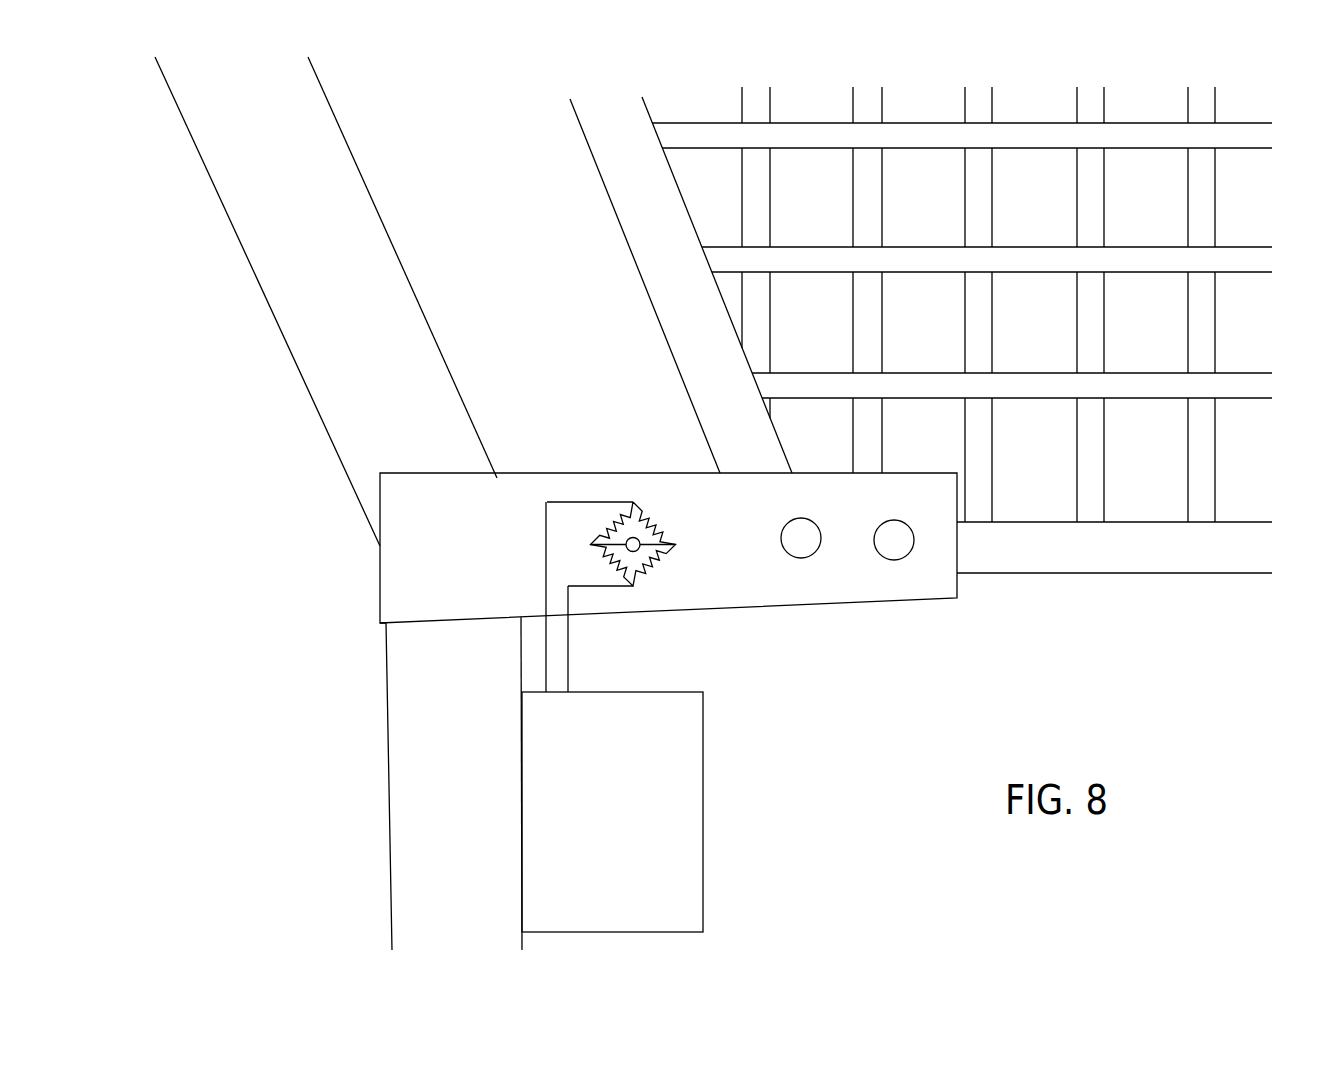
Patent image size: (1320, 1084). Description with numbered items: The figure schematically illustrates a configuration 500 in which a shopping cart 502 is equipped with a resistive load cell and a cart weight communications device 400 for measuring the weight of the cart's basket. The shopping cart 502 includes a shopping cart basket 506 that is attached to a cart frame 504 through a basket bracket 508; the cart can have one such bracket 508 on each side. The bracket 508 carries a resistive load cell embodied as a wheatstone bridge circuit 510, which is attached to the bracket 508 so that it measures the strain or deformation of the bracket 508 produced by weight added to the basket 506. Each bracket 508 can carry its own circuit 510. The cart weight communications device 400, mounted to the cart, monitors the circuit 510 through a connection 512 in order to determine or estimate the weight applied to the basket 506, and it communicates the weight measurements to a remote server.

The configuration 500 is at (234, 439).
The shopping cart 502 is at (377, 205).
The cart frame 504 is at (425, 668).
The shopping cart basket 506 is at (1130, 552).
The basket bracket 508 is at (723, 582).
The wheatstone bridge circuit 510 is at (626, 498).
The connection 512 is at (573, 653).
The cart weight communications device 400 is at (678, 810).